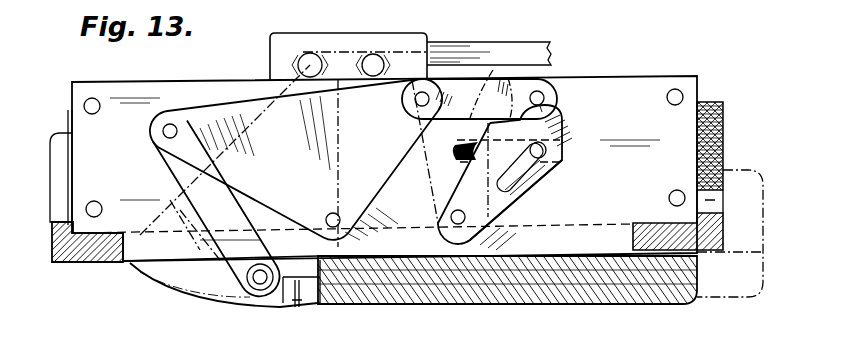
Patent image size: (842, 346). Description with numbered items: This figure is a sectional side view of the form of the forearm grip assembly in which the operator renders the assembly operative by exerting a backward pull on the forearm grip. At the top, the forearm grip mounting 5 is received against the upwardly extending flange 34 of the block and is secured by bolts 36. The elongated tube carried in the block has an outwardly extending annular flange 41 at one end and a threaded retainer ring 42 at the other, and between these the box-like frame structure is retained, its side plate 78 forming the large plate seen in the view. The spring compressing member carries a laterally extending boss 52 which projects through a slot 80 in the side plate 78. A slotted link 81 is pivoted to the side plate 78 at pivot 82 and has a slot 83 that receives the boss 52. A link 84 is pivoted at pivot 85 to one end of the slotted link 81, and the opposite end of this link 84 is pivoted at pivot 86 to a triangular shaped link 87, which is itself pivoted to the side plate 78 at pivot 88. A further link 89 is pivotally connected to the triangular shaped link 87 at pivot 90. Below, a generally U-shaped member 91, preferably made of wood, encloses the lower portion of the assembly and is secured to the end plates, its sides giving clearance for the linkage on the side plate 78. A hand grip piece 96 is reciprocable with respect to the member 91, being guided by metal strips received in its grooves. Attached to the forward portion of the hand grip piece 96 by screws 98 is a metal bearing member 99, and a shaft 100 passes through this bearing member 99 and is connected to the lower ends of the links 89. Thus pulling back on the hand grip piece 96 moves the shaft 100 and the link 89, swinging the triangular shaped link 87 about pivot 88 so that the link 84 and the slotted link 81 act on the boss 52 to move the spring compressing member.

The forearm grip mounting 5 is at (493, 52).
The flange 34 is at (402, 40).
The bolts 36 is at (372, 54).
The annular flange 41 is at (66, 115).
The retainer ring 42 is at (711, 100).
The boss 52 is at (548, 160).
The side plate 78 is at (632, 88).
The slot 80 is at (563, 140).
The slotted link 81 is at (508, 212).
The pivot 82 is at (450, 217).
The slot 83 is at (536, 178).
The link 84 is at (520, 80).
The pivot 85 is at (545, 95).
The pivot 86 is at (416, 112).
The triangular shaped link 87 is at (213, 107).
The pivot 88 is at (350, 233).
The link 89 is at (171, 177).
The pivot 90 is at (163, 131).
The U-shaped member 91 is at (58, 269).
The hand grip piece 96 is at (647, 304).
The screws 98 is at (302, 306).
The bearing member 99 is at (297, 304).
The shaft 100 is at (262, 295).